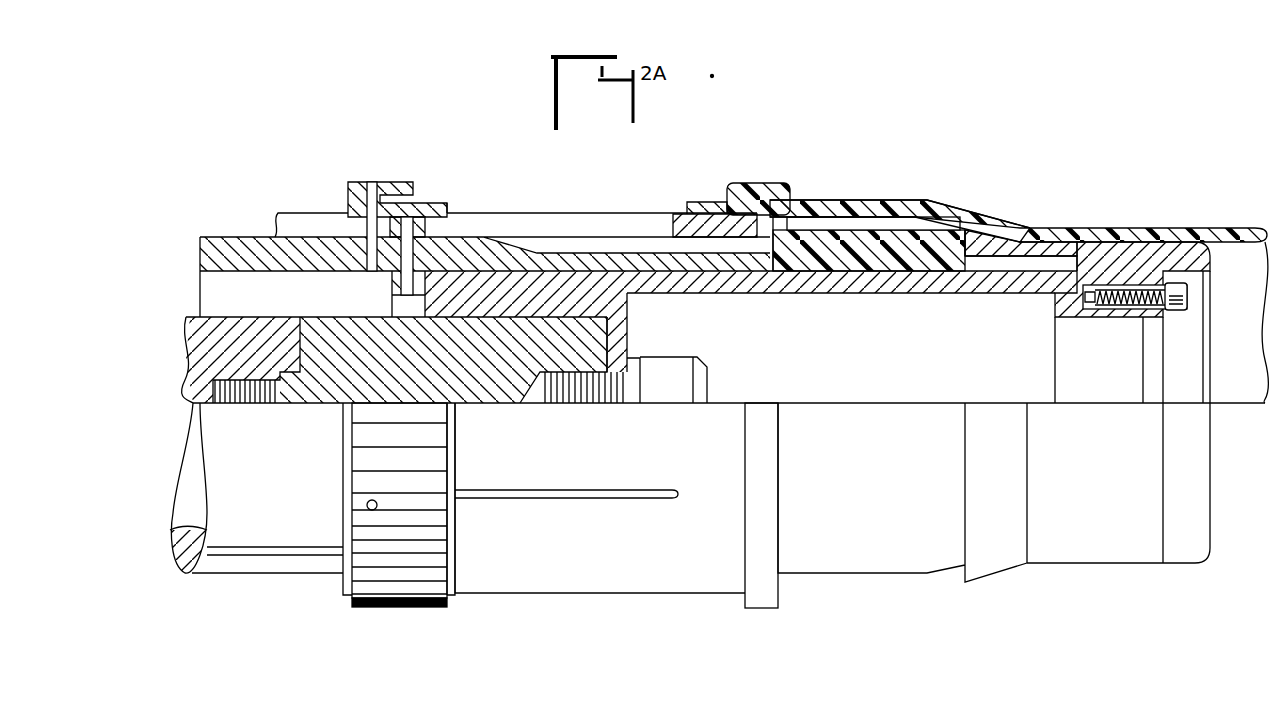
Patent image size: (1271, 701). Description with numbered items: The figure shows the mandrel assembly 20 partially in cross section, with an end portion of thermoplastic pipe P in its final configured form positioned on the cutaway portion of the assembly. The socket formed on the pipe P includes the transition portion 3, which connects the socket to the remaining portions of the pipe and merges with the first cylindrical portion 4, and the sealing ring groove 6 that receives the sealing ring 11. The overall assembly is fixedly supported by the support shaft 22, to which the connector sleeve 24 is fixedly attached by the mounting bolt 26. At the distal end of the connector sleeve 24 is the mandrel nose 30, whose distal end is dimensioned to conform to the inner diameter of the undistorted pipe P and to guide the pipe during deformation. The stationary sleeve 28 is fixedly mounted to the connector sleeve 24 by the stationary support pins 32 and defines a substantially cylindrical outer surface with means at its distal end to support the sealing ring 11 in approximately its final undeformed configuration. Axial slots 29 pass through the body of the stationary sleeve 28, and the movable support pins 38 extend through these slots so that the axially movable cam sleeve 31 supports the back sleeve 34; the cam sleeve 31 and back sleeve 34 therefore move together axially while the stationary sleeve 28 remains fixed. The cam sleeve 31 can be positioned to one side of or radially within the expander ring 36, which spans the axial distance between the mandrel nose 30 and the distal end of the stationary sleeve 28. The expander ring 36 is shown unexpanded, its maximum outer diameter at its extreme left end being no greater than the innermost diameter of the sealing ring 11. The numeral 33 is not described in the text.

The transition portion 3 is at (1012, 235).
The first cylindrical portion 4 is at (920, 203).
The sealing ring groove 6 is at (790, 187).
The sealing ring 11 is at (768, 608).
The mandrel assembly 20 is at (873, 597).
The support shaft 22 is at (195, 320).
The connector sleeve 24 is at (992, 291).
The mounting bolt 26 is at (697, 368).
The stationary sleeve 28 is at (690, 213).
The axial slots 29 is at (545, 222).
The mandrel nose 30 is at (1215, 258).
The cam sleeve 31 is at (200, 252).
The stationary support pins 32 is at (452, 211).
The slide bar 33 is at (390, 239).
The back sleeve 34 is at (322, 191).
The expander ring 36 is at (858, 235).
The movable support pins 38 is at (376, 182).
The thermoplastic pipe P is at (1173, 228).